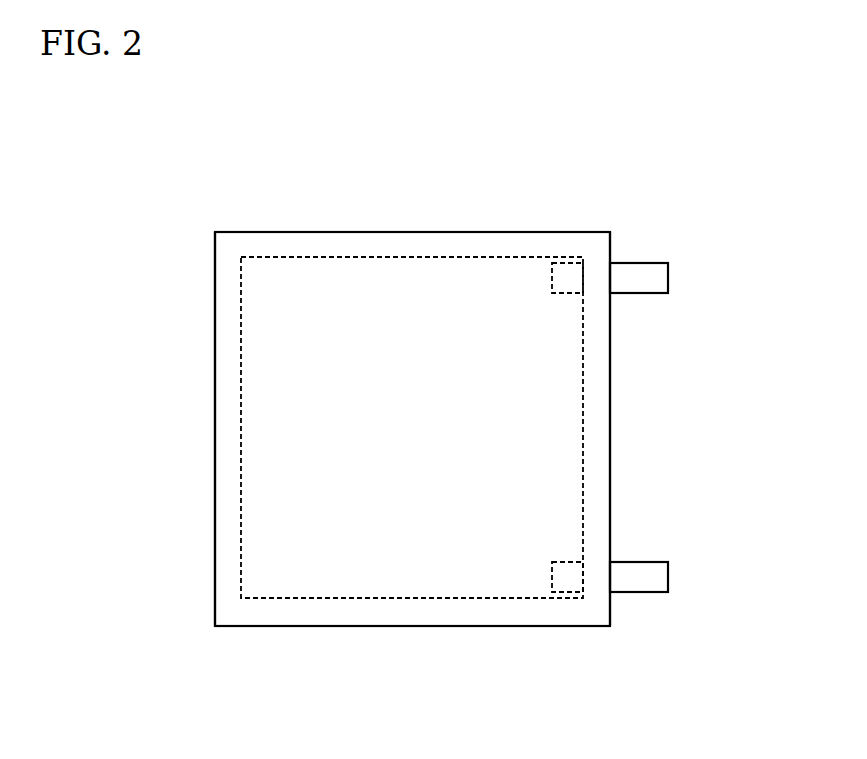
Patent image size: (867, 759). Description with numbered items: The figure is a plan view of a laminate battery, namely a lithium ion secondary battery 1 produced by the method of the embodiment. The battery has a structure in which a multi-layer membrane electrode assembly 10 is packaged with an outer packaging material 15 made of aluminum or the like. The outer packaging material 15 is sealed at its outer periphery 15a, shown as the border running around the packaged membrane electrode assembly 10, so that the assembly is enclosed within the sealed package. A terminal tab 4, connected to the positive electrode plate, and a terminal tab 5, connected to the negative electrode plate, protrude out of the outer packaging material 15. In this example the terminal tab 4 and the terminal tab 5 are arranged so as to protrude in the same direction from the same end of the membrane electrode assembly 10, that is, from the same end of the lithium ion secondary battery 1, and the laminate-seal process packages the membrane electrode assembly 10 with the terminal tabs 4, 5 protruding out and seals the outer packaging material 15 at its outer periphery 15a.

The lithium ion secondary battery 1 is at (236, 187).
The outer packaging material 15 is at (255, 499).
The outer periphery 15a is at (383, 250).
The membrane electrode assembly 10 is at (499, 253).
The terminal tab 4 is at (634, 272).
The terminal tab 5 is at (634, 570).